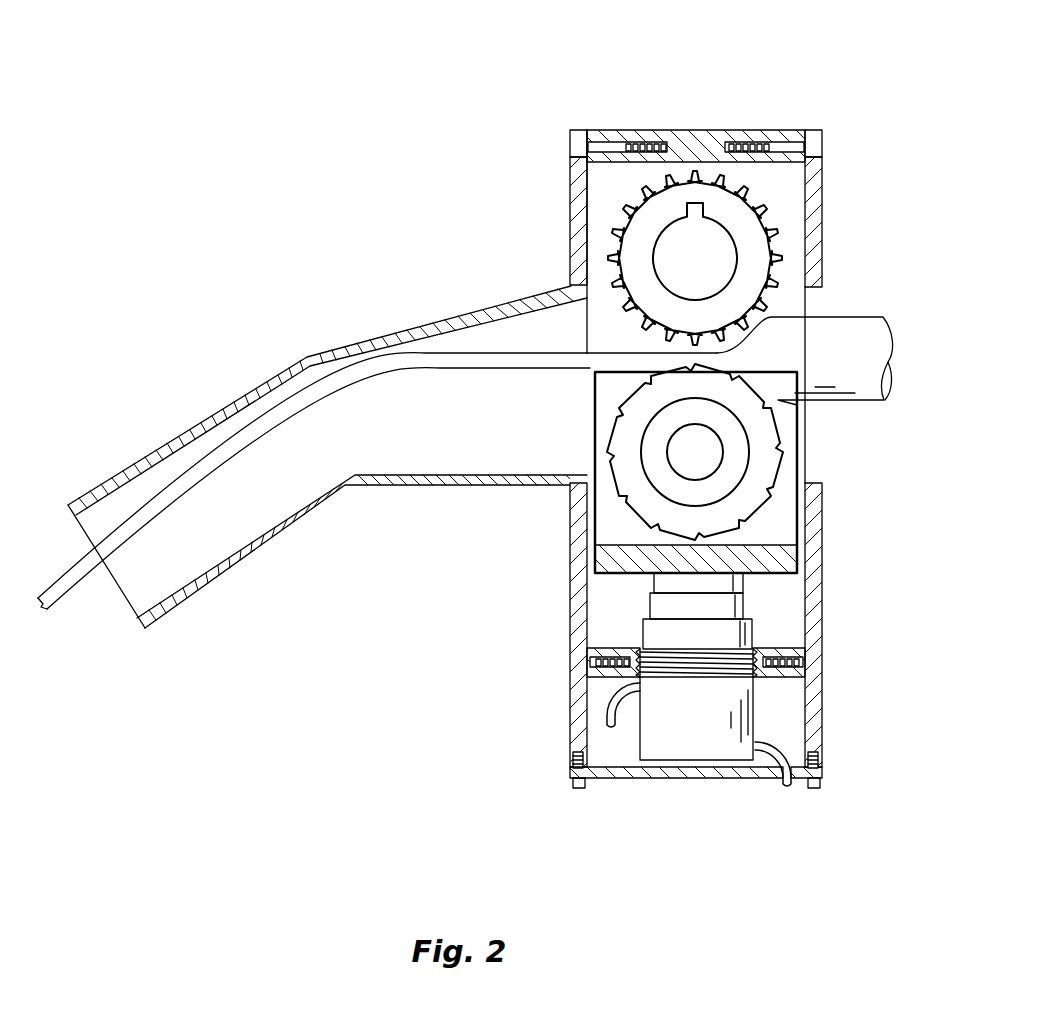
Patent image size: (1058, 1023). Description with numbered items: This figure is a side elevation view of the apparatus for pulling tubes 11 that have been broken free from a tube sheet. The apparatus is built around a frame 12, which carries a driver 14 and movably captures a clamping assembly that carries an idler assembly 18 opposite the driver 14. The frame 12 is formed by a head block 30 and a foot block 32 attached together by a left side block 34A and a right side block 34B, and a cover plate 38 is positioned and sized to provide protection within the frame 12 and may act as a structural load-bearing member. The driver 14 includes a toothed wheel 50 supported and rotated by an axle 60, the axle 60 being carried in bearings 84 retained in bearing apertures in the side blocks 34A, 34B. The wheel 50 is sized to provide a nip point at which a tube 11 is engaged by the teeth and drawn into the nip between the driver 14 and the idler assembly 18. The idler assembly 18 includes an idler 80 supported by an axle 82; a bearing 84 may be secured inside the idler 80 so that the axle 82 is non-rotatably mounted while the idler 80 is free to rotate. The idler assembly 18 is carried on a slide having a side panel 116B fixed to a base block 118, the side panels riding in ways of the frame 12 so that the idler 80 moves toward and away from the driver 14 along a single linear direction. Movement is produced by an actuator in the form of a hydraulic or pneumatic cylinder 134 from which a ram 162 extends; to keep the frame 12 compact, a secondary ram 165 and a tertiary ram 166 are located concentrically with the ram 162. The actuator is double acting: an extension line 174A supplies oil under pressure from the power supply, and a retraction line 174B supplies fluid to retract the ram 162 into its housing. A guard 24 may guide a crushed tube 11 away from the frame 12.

The tube 11 is at (848, 338).
The frame 12 is at (567, 185).
The driver 14 is at (558, 230).
The idler assembly 18 is at (575, 450).
The guard 24 is at (260, 385).
The head block 30 is at (692, 130).
The foot block 32 is at (605, 650).
The left side block 34A is at (823, 715).
The right side block 34B is at (602, 190).
The cover plate 38 is at (645, 778).
The wheel 50 is at (607, 243).
The axle 60 is at (717, 258).
The idler 80 is at (755, 425).
The axle 82 is at (700, 452).
The bearing 84 is at (715, 488).
The side panel 116B is at (607, 403).
The base block 118 is at (610, 563).
The cylinder 134 is at (680, 742).
The ram 162 is at (745, 583).
The secondary ram 165 is at (745, 600).
The tertiary ram 166 is at (752, 623).
The extension line 174A is at (770, 757).
The retraction line 174B is at (620, 710).